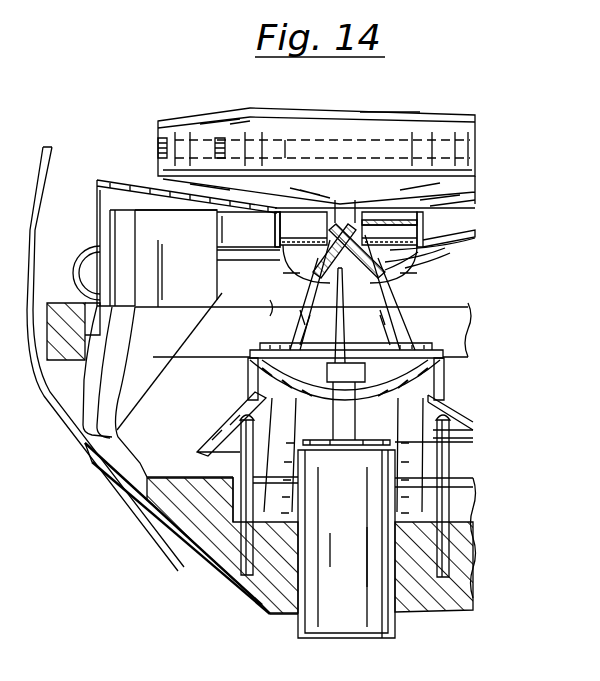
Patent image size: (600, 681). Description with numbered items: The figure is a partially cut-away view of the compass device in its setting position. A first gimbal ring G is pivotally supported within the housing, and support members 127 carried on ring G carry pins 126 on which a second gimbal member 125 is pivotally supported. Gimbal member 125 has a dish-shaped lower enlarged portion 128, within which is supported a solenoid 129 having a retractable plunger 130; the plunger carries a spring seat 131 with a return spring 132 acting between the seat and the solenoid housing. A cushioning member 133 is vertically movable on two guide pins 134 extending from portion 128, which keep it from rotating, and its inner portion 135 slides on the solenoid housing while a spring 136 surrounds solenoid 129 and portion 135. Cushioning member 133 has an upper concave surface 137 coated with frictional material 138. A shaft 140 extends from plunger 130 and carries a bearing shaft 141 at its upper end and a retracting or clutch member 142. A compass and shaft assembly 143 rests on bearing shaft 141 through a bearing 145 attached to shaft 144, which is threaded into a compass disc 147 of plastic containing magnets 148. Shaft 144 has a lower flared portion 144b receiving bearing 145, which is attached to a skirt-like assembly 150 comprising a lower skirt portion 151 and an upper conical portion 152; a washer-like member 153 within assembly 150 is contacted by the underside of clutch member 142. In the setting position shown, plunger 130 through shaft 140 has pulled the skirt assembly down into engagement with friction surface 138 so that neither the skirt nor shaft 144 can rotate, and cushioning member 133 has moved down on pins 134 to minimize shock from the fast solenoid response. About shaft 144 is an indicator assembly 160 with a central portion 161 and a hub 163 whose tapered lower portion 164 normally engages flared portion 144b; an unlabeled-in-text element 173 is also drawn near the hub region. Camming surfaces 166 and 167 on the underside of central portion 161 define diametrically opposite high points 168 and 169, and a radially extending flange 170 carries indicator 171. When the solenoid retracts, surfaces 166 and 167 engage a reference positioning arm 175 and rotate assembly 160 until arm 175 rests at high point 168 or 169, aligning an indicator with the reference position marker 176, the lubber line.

The second gimbal member 125 is at (127, 480).
The pins 126 is at (107, 225).
The support members 127 is at (112, 335).
The lower enlarged portion 128 is at (161, 474).
The solenoid 129 is at (337, 583).
The retractable plunger 130 is at (358, 447).
The spring seat 131 is at (337, 447).
The return spring 132 is at (360, 447).
The cushioning member 133 is at (433, 440).
The guide pins 134 is at (245, 512).
The inner portion 135 is at (292, 492).
The spring 136 is at (452, 504).
The upper concave surface 137 is at (433, 398).
The frictional material 138 is at (436, 392).
The shaft 140 is at (347, 350).
The bearing shaft 141 is at (418, 252).
The clutch member 142 is at (440, 355).
The compass and shaft assembly 143 is at (466, 109).
The shaft 144 is at (418, 227).
The lower flared portion 144b is at (445, 248).
The bearing 145 is at (306, 318).
The compass disc 147 is at (237, 133).
The magnets 148 is at (217, 146).
The skirt-like assembly 150 is at (267, 343).
The lower skirt portion 151 is at (220, 422).
The upper conical portion 152 is at (348, 290).
The washer-like member 153 is at (252, 377).
The indicator assembly 160 is at (112, 182).
The central portion 161 is at (470, 240).
The hub 163 is at (333, 220).
The tapered lower portion 164 is at (276, 230).
The camming surface 166 is at (450, 253).
The camming surface 167 is at (290, 275).
The high point 168 is at (217, 240).
The high point 169 is at (475, 238).
The radially extending flange 170 is at (136, 185).
The indicator 171 is at (83, 270).
The flange 173 is at (473, 207).
The reference positioning arm 175 is at (243, 253).
The reference position marker 176 is at (46, 160).
The first gimbal ring G is at (58, 360).